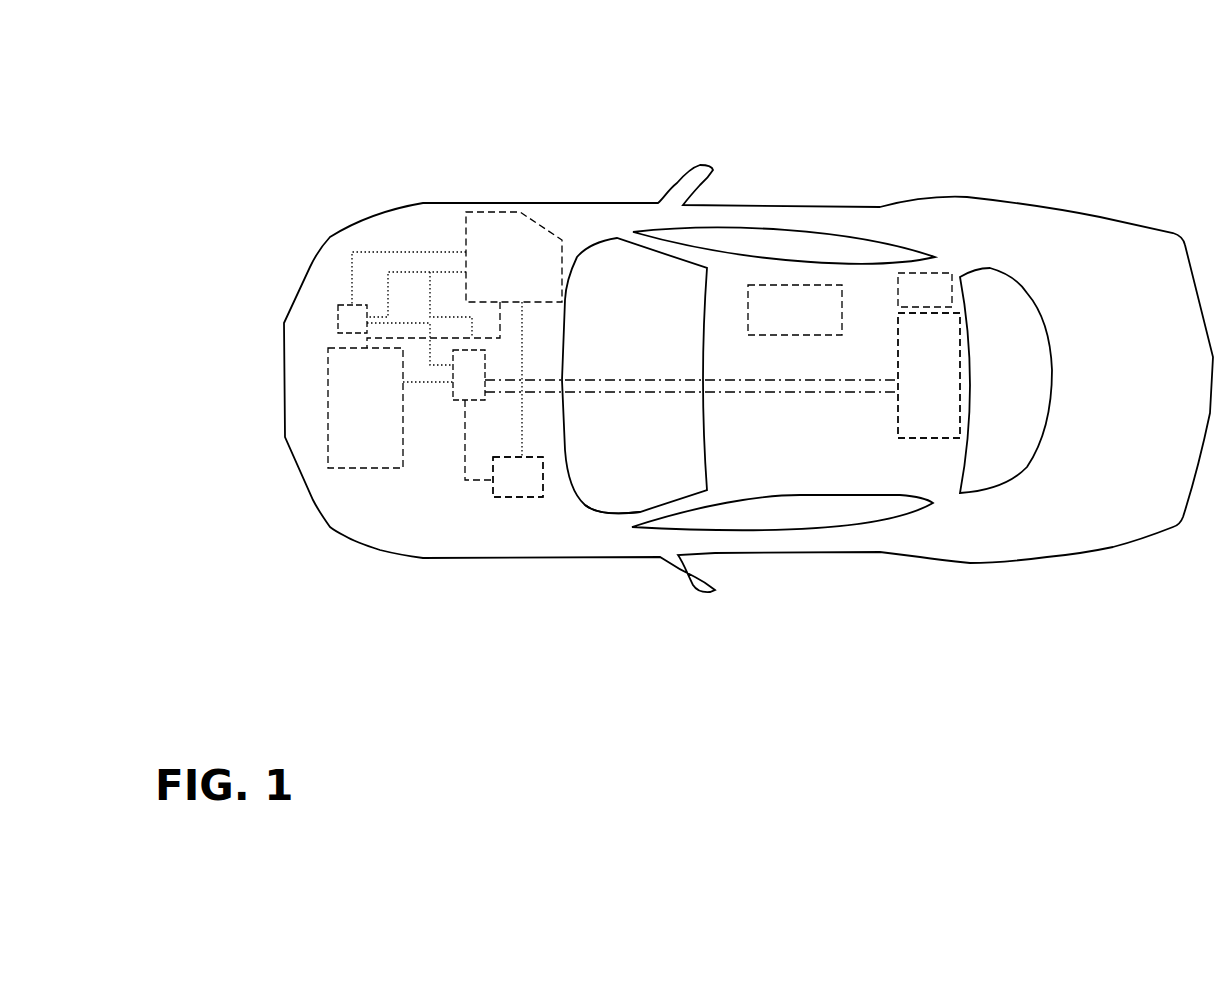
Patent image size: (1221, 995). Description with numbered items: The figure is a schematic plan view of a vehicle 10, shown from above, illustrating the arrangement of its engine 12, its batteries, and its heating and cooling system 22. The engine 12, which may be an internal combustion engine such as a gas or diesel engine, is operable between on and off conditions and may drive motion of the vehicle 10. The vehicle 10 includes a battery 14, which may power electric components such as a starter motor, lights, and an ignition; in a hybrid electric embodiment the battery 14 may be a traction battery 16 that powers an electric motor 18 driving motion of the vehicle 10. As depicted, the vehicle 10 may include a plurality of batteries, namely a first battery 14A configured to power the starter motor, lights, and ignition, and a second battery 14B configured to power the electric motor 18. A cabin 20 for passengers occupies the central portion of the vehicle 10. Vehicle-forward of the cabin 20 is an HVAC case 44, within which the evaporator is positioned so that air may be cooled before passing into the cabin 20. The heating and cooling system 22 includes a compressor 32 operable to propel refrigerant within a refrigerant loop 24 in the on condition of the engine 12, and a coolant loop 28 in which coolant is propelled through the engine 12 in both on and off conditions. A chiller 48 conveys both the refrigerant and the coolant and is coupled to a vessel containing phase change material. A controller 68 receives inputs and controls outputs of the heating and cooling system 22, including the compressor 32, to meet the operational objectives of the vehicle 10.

The vehicle 10 is at (857, 127).
The engine 12 is at (330, 428).
The battery 14 is at (498, 500).
The first battery 14A is at (530, 498).
The second battery 14B is at (943, 440).
The traction battery 16 is at (960, 410).
The electric motor 18 is at (938, 275).
The cabin 20 is at (641, 487).
The heating and cooling system 22 is at (455, 223).
The refrigerant loop 24 is at (372, 243).
The coolant loop 28 is at (462, 462).
The compressor 32 is at (337, 320).
The HVAC case 44 is at (492, 212).
The chiller 48 is at (453, 400).
The controller 68 is at (773, 285).